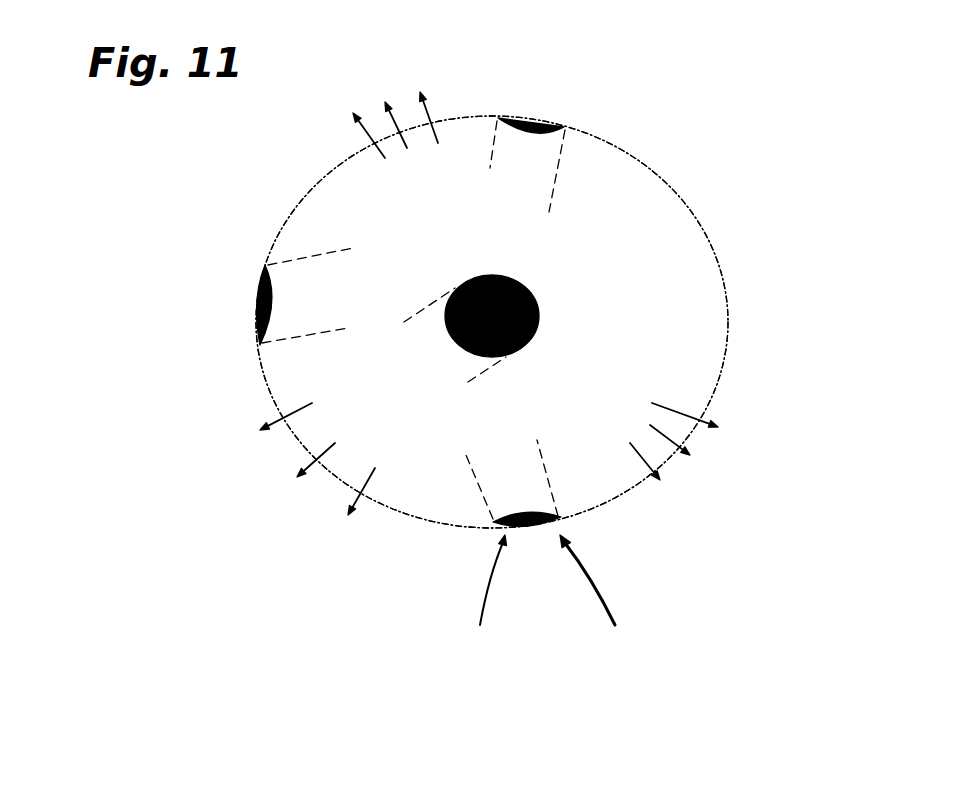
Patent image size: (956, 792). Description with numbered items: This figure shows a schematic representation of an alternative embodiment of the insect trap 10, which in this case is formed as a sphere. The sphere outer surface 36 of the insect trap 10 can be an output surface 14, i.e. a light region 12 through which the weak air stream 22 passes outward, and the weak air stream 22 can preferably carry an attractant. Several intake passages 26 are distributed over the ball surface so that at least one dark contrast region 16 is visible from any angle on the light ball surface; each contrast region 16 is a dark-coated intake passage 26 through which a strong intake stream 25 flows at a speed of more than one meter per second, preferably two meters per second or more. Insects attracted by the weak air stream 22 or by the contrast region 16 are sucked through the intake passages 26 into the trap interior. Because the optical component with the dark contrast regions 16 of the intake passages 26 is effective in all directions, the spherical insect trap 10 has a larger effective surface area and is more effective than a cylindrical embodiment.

The insect trap 10 is at (446, 300).
The light region 12 is at (543, 322).
The output surface 14 is at (679, 241).
The contrast region 16 is at (426, 265).
The intake passage 26 is at (531, 118).
The weak air stream 22 is at (680, 416).
The strong intake stream 25 is at (507, 592).
The sphere outer surface 36 is at (650, 164).